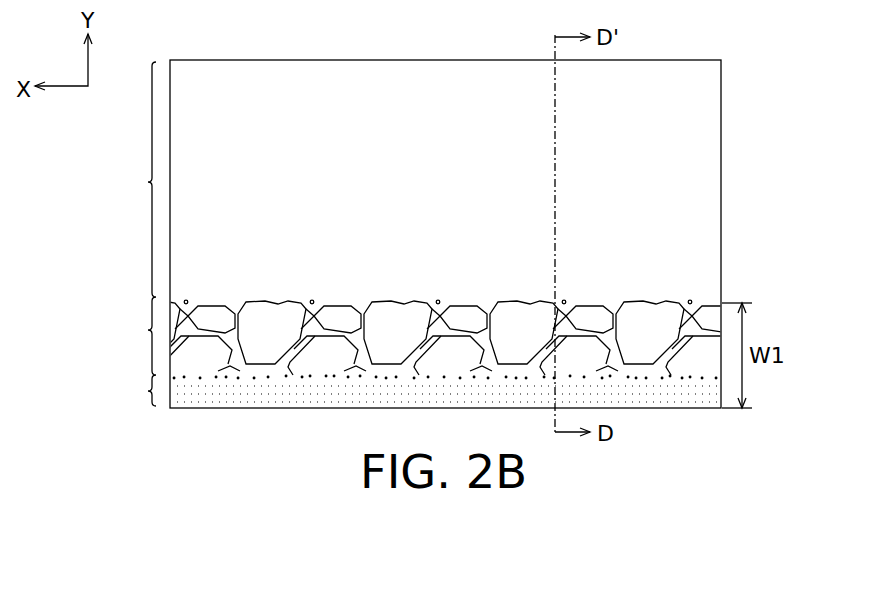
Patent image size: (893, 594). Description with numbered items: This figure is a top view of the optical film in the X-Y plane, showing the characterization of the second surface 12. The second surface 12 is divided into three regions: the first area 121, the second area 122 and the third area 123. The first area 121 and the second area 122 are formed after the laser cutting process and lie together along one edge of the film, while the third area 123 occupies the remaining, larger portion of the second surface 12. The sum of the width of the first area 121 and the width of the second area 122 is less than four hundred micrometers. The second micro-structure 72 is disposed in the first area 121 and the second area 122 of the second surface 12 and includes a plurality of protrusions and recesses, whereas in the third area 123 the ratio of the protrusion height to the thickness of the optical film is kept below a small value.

The second surface 12 is at (618, 198).
The first area 121 is at (415, 391).
The second area 122 is at (430, 337).
The third area 123 is at (417, 178).
The second micro-structure 72 is at (257, 378).